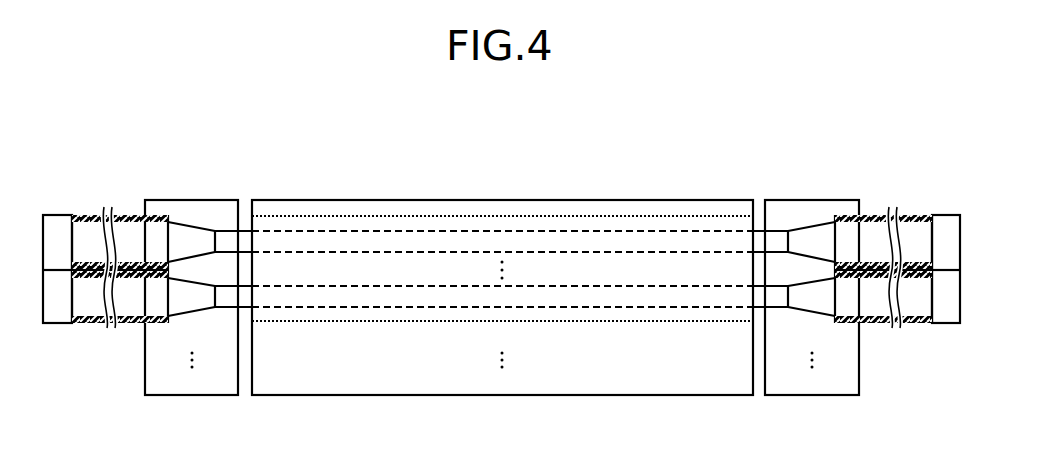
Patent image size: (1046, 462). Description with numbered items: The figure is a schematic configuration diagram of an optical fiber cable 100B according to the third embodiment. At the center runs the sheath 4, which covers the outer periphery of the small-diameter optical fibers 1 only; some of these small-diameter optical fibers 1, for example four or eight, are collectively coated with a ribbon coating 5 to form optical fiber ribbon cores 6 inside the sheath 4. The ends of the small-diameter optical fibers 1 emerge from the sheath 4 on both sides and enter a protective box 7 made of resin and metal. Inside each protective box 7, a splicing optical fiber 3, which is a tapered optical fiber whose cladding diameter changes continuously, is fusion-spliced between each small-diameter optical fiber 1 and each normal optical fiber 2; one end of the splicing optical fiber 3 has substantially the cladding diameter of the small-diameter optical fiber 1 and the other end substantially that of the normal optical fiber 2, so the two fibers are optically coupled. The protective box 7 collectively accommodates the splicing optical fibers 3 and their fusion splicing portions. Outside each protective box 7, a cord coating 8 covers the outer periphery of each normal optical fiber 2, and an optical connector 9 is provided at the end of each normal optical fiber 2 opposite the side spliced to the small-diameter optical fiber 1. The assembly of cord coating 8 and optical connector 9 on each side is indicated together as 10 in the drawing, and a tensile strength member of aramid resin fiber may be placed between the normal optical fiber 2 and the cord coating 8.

The optical fiber cable 100B is at (686, 138).
The small-diameter optical fiber 1 is at (776, 230).
The normal optical fiber 2 is at (131, 215).
The splicing optical fiber 3 is at (194, 224).
The sheath 4 is at (650, 200).
The ribbon coating 5 is at (379, 215).
The optical fiber ribbon core 6 is at (276, 210).
The protective box 7 is at (216, 200).
The cord coating 8 is at (93, 215).
The optical connector 9 is at (57, 215).
The optical fiber connector 10 is at (93, 158).